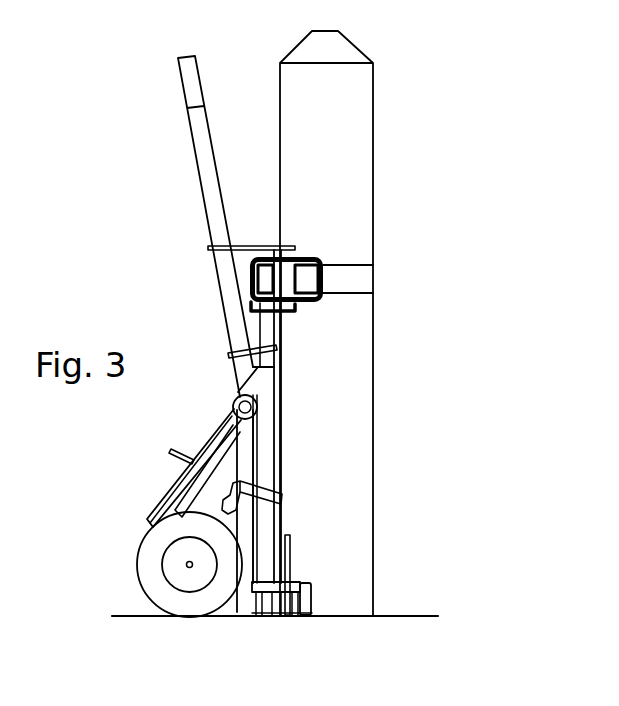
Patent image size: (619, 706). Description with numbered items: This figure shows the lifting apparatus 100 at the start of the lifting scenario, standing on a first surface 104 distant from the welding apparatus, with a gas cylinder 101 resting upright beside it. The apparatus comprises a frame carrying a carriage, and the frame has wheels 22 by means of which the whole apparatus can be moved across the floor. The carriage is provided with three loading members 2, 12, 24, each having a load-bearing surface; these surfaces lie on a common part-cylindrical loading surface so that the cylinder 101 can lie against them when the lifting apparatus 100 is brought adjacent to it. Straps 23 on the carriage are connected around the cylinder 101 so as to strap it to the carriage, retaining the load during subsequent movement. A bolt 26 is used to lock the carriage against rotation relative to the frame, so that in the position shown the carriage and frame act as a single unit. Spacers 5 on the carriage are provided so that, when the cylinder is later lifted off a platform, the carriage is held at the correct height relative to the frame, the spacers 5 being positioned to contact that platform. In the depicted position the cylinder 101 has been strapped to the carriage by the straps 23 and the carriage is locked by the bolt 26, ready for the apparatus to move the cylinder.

The lifting apparatus 100 is at (201, 180).
The gas cylinder 101 is at (355, 146).
The loading member 12 is at (298, 247).
The straps 23 is at (363, 283).
The loading member 24 is at (297, 311).
The bolt 26 is at (290, 552).
The loading member 2 is at (308, 585).
The first surface 104 is at (418, 615).
The spacers 5 is at (303, 617).
The wheels 22 is at (162, 587).